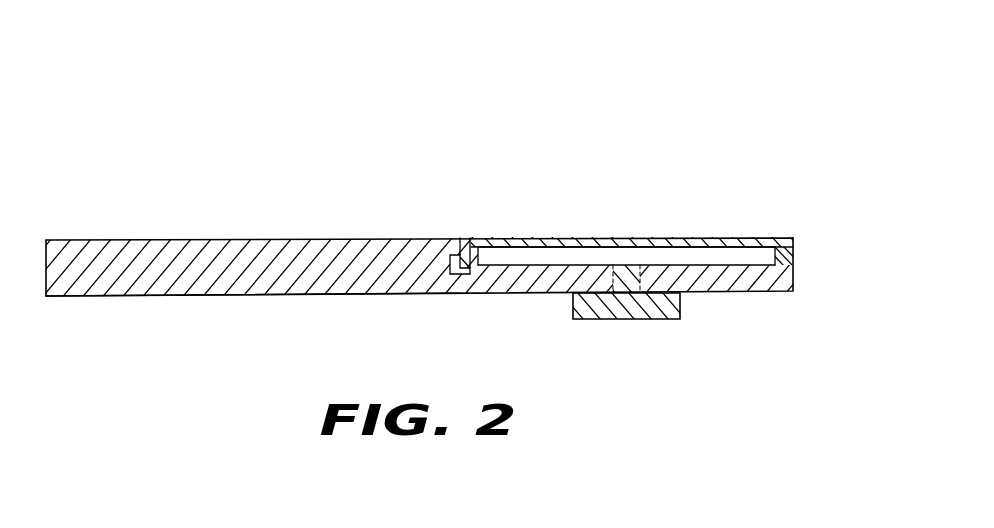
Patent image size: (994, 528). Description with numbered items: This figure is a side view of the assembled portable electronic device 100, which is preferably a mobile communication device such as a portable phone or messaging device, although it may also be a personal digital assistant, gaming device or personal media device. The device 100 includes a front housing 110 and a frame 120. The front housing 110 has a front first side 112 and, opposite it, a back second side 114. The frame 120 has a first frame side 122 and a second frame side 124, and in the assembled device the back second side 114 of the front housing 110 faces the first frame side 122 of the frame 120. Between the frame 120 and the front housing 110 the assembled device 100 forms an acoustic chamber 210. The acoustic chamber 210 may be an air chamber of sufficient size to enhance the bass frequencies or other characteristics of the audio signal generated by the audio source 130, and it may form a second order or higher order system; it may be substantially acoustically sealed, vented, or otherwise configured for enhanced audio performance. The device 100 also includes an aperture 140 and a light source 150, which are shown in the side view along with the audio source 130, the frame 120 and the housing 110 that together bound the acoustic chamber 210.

The portable electronic device 100 is at (240, 183).
The front housing 110 is at (558, 236).
The front first side 112 is at (515, 236).
The back second side 114 is at (752, 249).
The frame 120 is at (793, 279).
The first frame side 122 is at (737, 262).
The second frame side 124 is at (362, 296).
The audio source 130 is at (617, 319).
The aperture 140 is at (613, 280).
The light source 150 is at (462, 275).
The acoustic chamber 210 is at (670, 254).